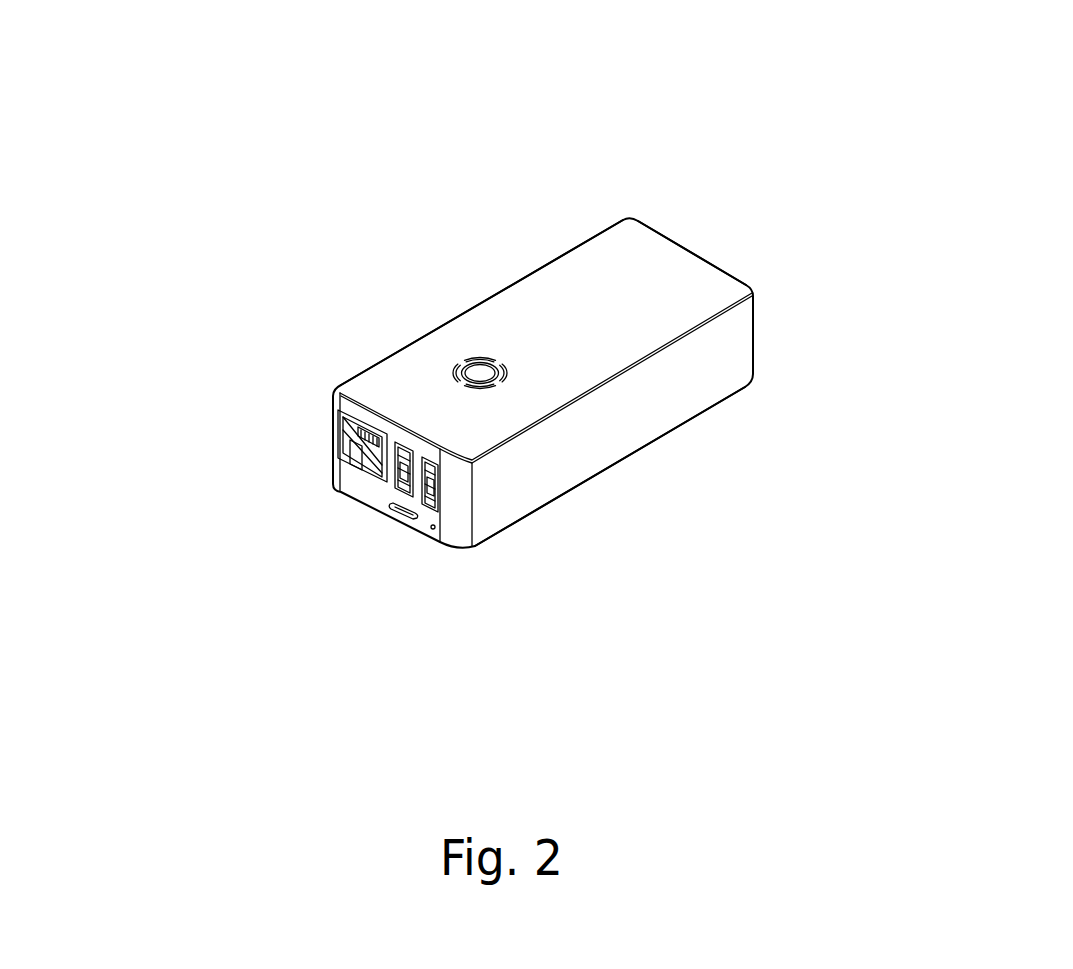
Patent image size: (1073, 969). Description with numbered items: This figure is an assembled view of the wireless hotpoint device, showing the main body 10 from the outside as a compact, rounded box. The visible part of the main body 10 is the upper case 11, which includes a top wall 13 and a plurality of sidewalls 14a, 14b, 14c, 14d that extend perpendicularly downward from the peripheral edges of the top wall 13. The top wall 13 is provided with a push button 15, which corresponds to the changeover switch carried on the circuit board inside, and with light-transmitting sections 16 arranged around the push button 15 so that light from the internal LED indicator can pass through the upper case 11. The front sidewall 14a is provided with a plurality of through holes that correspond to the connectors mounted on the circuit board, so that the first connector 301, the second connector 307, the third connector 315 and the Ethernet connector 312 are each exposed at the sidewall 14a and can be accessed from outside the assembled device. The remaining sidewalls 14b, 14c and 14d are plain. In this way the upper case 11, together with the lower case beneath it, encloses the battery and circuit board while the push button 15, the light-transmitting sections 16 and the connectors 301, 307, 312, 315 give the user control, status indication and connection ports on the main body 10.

The main body 10 is at (1068, 57).
The upper case 11 is at (672, 184).
The top wall 13 is at (556, 291).
The sidewall 14a is at (347, 473).
The sidewall 14b is at (617, 410).
The sidewall 14c is at (697, 251).
The sidewall 14d is at (593, 236).
The push button 15 is at (484, 372).
The light-transmitting sections 16 is at (453, 373).
The first connector 301 is at (395, 518).
The second connector 307 is at (395, 487).
The Ethernet connector 312 is at (340, 457).
The third connector 315 is at (427, 512).